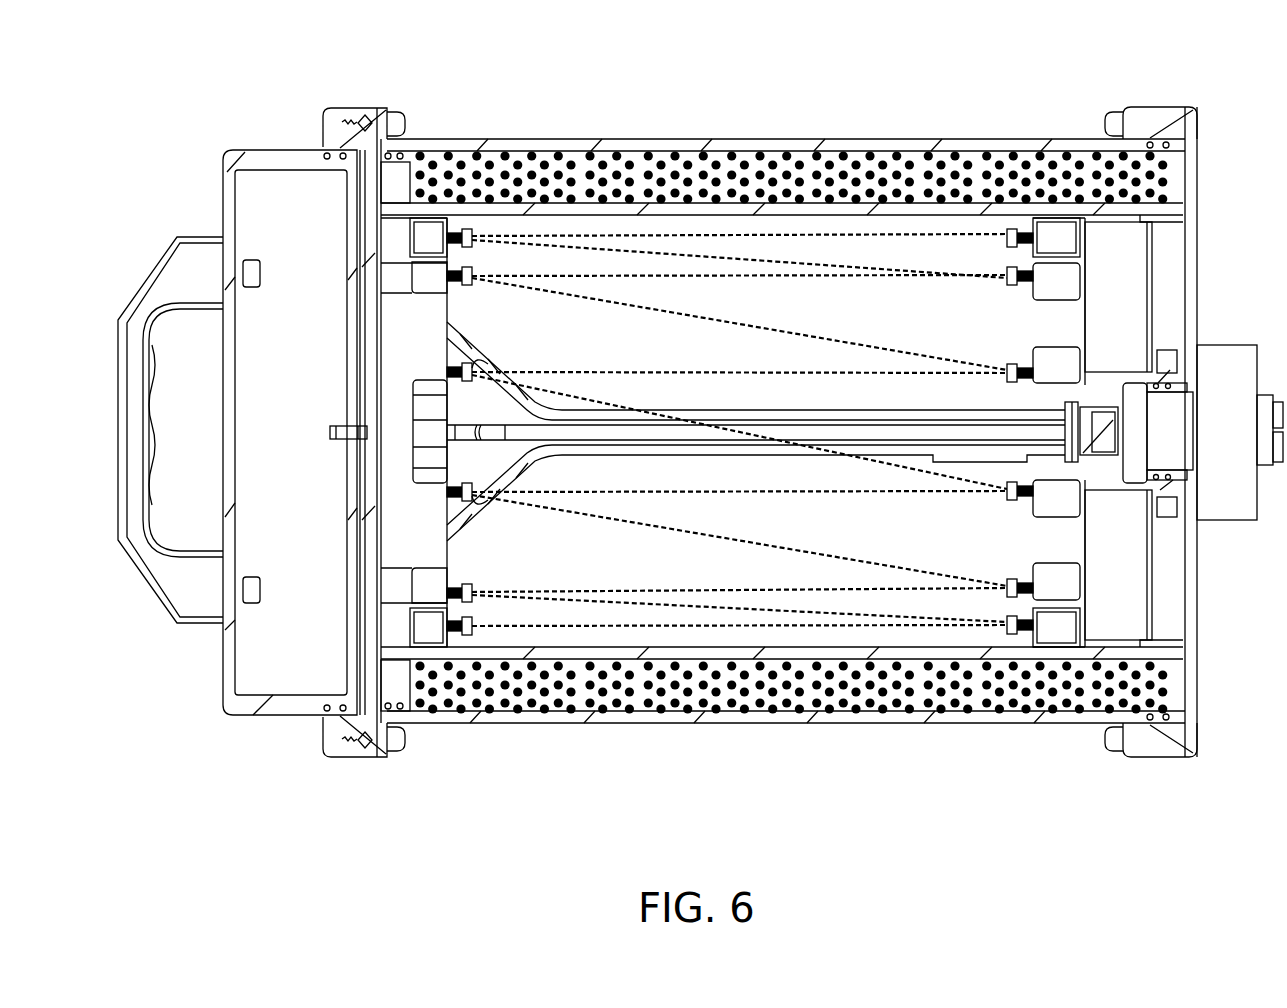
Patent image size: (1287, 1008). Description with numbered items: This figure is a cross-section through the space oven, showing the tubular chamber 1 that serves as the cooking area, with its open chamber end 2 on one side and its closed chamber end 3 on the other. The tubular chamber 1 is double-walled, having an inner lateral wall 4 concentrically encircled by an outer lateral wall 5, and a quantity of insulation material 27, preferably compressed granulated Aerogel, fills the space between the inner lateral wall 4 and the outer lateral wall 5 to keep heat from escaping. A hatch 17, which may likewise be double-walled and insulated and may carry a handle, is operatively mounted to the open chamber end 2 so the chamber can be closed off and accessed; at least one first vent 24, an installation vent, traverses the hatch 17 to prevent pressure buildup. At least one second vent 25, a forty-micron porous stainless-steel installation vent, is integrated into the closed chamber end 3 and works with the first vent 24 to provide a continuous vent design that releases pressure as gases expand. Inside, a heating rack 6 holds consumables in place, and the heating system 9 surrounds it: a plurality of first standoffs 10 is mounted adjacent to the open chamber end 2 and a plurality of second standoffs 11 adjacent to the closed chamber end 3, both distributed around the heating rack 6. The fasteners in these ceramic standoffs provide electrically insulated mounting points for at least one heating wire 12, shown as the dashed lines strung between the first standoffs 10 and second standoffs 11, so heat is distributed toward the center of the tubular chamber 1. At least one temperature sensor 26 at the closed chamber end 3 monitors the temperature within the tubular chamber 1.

The tubular chamber 1 is at (612, 36).
The open chamber end 2 is at (363, 365).
The closed chamber end 3 is at (1199, 299).
The inner lateral wall 4 is at (727, 216).
The outer lateral wall 5 is at (750, 777).
The heating rack 6 is at (737, 447).
The heating system 9 is at (740, 432).
The plurality of first standoffs 10 is at (472, 363).
The plurality of second standoffs 11 is at (1000, 373).
The at least one heating wire 12 is at (655, 373).
The hatch 17 is at (287, 150).
The at least one first vent 24 is at (330, 433).
The at least one second vent 25 is at (1177, 358).
The at least one temperature sensor 26 is at (1213, 513).
The quantity of insulation material 27 is at (753, 92).